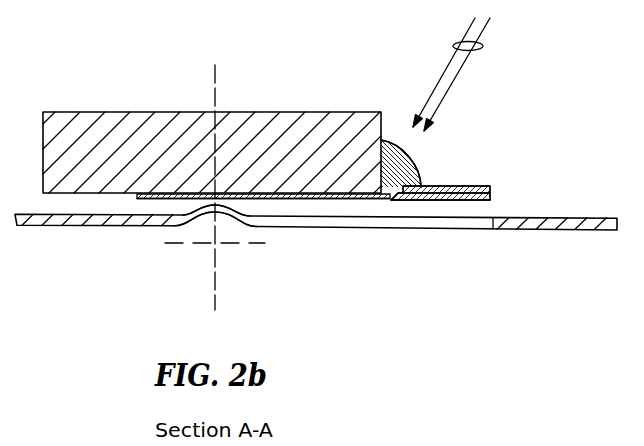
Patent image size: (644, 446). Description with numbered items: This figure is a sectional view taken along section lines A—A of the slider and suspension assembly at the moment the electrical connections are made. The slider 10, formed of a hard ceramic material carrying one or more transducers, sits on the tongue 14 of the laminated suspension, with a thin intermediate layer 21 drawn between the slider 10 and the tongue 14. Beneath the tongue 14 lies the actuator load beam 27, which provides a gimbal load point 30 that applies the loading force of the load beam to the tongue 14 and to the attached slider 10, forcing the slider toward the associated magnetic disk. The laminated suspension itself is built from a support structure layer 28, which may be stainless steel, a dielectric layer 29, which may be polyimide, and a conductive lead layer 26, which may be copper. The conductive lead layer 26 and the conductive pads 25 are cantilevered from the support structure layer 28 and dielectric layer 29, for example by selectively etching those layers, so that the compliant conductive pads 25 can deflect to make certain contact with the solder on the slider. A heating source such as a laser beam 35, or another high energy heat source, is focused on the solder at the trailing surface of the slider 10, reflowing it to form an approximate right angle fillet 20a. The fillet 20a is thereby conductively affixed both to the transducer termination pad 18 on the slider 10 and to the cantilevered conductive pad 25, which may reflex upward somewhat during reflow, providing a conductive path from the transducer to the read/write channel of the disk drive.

The slider 10 is at (93, 112).
The tongue 14 is at (272, 198).
The termination pads 18 is at (383, 138).
The right angle fillet 20a is at (417, 167).
The adhesive layer 21 is at (87, 198).
The conductive pads 25 is at (412, 200).
The conductive lead layer 26 is at (470, 186).
The actuator load beam 27 is at (53, 228).
The support structure layer 28 is at (490, 196).
The dielectric layer 29 is at (490, 187).
The gimbal load point 30 is at (200, 227).
The laser beam 35 is at (483, 46).